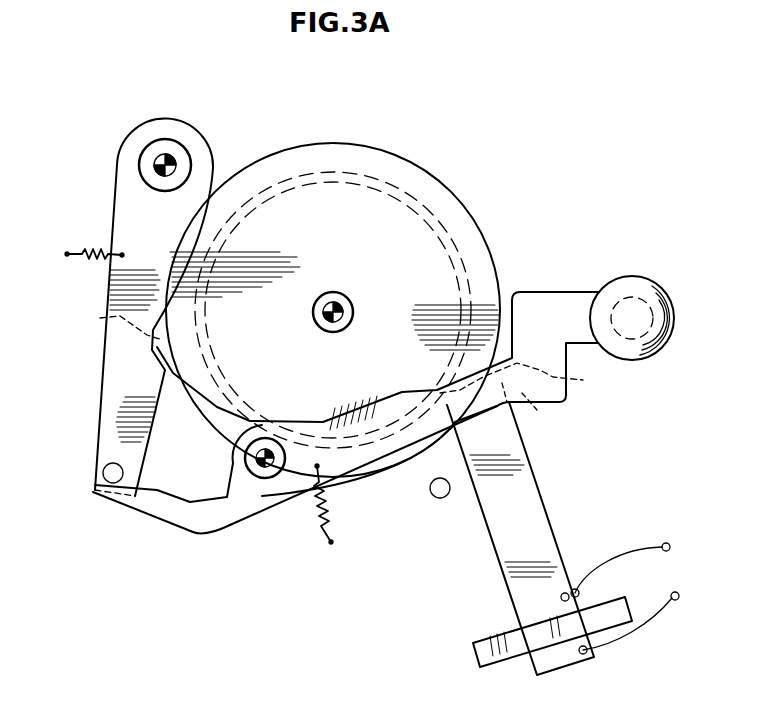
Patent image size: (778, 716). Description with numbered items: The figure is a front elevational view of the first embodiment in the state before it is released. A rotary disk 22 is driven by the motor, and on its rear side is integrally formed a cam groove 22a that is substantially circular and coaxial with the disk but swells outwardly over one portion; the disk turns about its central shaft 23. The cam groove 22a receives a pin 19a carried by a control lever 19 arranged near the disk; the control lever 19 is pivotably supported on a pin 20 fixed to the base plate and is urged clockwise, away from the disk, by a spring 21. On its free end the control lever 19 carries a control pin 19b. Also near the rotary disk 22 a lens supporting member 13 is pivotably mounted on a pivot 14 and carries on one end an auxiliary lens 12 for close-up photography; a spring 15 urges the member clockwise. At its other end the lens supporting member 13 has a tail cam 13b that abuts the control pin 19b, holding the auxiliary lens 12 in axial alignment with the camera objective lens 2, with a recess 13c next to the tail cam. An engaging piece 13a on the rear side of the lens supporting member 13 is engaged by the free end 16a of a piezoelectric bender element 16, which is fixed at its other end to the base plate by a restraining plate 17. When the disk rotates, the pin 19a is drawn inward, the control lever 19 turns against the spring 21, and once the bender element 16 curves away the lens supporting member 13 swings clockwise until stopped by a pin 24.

The camera objective lens 2 is at (617, 300).
The auxiliary lens 12 is at (652, 292).
The lens supporting member 13 is at (527, 305).
The engaging piece 13a is at (560, 380).
The tail cam 13b is at (147, 489).
The recess 13c is at (205, 508).
The pivot pin 14 is at (272, 466).
The spring 15 is at (330, 512).
The piezoelectric bender element 16 is at (532, 500).
The free end 16a is at (535, 408).
The restraining plate 17 is at (603, 605).
The control lever 19 is at (107, 370).
The pin 19a is at (100, 318).
The control pin 19b is at (104, 468).
The pin 20 is at (158, 158).
The spring 21 is at (86, 250).
The rotary disk 22 is at (405, 166).
The cam groove 22a is at (317, 174).
The wheel shaft 23 is at (337, 300).
The pin 24 is at (439, 499).